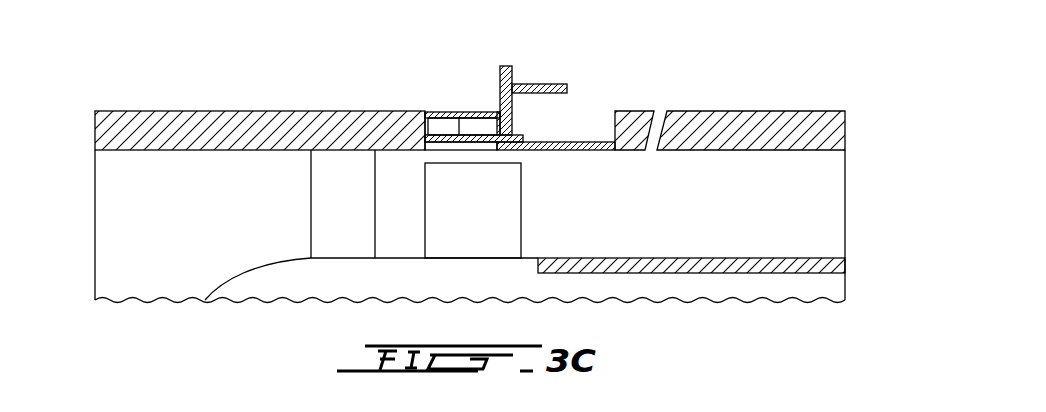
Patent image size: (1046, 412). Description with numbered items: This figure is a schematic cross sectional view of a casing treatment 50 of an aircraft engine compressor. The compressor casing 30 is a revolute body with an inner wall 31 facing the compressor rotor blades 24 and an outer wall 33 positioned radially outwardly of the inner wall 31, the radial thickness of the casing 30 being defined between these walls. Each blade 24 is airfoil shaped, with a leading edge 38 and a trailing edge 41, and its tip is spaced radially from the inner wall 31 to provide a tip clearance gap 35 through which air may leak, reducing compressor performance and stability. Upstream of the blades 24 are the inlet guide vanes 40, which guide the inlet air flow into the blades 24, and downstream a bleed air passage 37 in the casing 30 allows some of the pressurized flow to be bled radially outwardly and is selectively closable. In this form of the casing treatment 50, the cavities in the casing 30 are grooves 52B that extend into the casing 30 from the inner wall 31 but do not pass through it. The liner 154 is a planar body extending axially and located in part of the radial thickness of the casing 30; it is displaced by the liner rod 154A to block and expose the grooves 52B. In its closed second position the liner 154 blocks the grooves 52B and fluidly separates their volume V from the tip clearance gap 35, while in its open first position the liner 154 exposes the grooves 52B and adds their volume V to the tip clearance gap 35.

The compressor rotor blade 24 is at (476, 252).
The compressor casing 30 is at (849, 105).
The inner wall 31 is at (725, 151).
The outer wall 33 is at (730, 111).
The tip clearance gap 35 is at (417, 153).
The bleed air passage 37 is at (660, 112).
The leading edge 38 is at (425, 236).
The inlet guide vane 40 is at (299, 175).
The trailing edge 41 is at (521, 228).
The casing treatment 50 is at (436, 126).
The groove 52B is at (485, 160).
The liner 154 is at (458, 137).
The liner rod 154A is at (538, 86).
The volume V is at (473, 128).